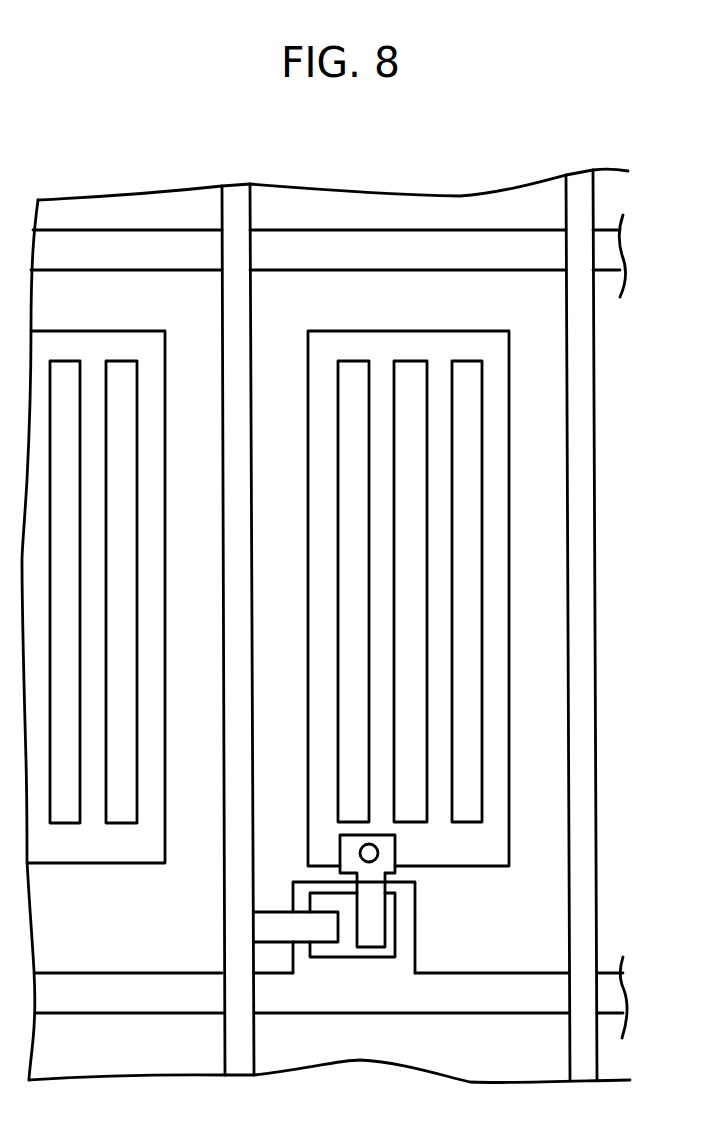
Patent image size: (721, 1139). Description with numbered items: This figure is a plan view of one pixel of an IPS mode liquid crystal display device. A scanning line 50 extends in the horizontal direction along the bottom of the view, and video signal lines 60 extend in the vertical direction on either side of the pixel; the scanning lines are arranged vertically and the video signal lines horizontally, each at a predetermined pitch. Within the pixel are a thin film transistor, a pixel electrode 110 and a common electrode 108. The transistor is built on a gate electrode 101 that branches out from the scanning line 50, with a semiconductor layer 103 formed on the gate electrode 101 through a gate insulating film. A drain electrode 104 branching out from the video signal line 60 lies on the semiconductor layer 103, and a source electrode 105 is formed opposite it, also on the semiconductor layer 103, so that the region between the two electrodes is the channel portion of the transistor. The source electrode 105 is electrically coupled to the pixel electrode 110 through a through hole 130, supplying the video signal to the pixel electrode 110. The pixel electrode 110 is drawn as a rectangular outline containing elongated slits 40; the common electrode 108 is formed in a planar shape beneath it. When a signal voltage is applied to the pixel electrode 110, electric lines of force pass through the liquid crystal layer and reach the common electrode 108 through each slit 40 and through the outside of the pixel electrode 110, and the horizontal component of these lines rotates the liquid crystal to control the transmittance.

The slit 40 is at (472, 642).
The scanning line 50 is at (506, 997).
The video signal line 60 is at (585, 885).
The gate electrode 101 is at (405, 933).
The semiconductor layer 103 is at (348, 948).
The drain electrode 104 is at (322, 930).
The source electrode 105 is at (370, 913).
The common electrode 108 is at (553, 802).
The pixel electrode 110 is at (495, 842).
The through hole 130 is at (362, 853).